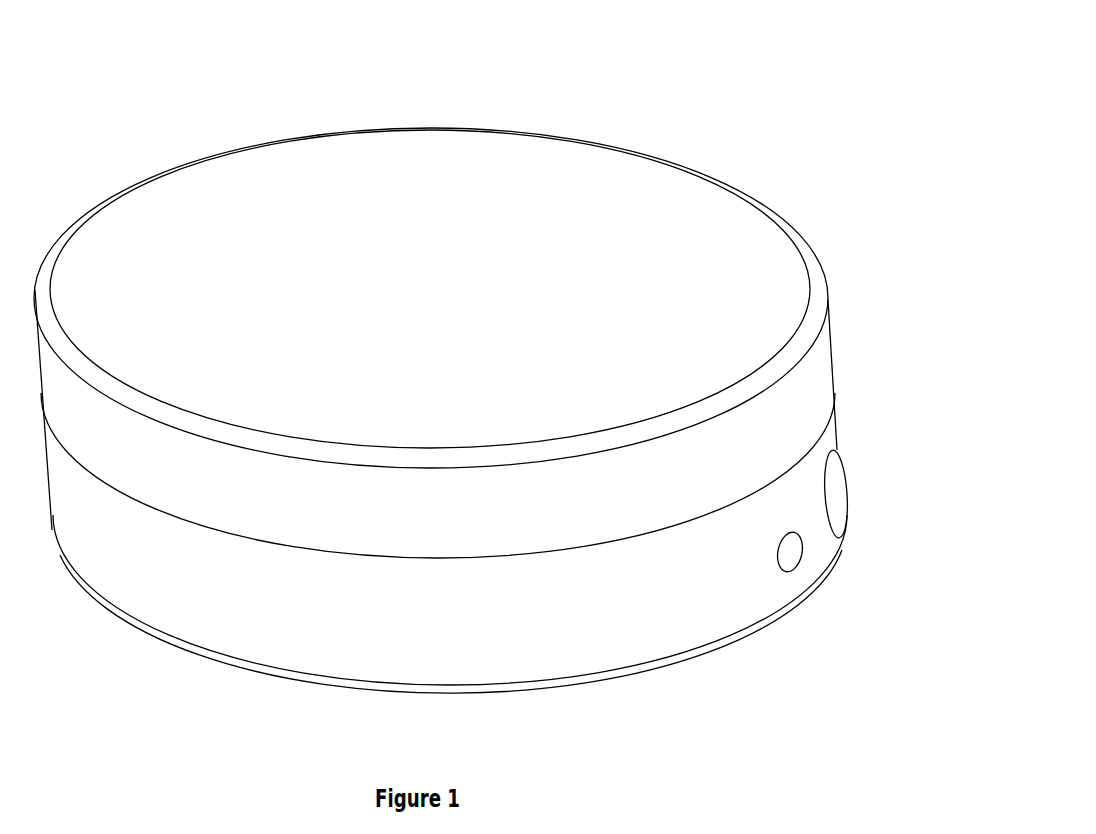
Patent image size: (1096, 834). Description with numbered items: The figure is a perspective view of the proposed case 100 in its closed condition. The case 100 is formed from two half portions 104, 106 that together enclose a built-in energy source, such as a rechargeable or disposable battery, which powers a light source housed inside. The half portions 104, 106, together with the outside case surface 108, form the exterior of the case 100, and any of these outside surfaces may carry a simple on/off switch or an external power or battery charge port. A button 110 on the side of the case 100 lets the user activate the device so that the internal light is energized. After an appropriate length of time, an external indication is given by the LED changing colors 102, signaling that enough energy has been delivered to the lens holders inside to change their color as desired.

The case 100 is at (697, 114).
The LED changing colors 102 is at (811, 583).
The half portion 104 is at (824, 362).
The half portion 106 is at (583, 631).
The outside case surface 108 is at (527, 172).
The button 110 is at (855, 449).